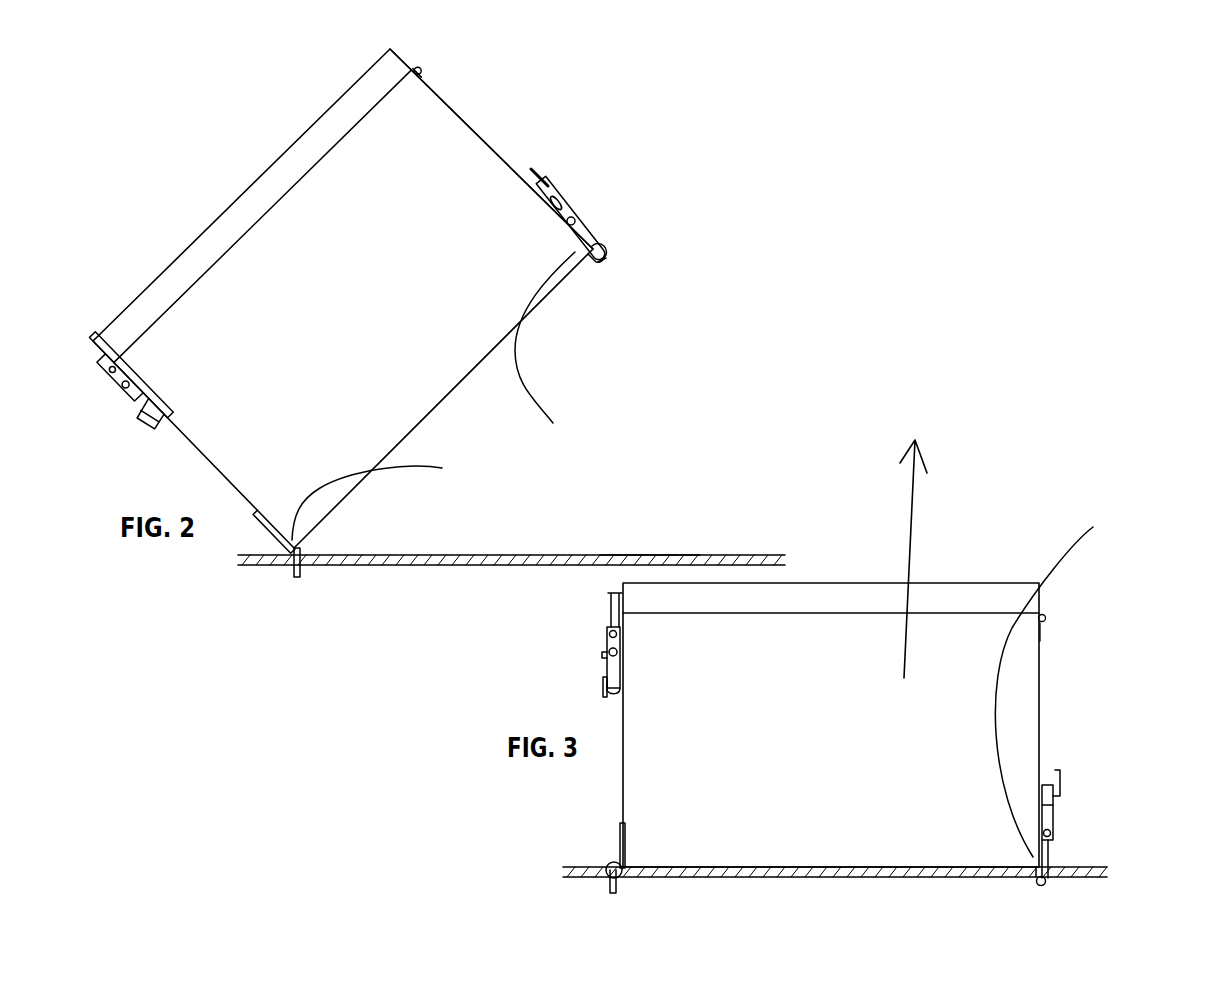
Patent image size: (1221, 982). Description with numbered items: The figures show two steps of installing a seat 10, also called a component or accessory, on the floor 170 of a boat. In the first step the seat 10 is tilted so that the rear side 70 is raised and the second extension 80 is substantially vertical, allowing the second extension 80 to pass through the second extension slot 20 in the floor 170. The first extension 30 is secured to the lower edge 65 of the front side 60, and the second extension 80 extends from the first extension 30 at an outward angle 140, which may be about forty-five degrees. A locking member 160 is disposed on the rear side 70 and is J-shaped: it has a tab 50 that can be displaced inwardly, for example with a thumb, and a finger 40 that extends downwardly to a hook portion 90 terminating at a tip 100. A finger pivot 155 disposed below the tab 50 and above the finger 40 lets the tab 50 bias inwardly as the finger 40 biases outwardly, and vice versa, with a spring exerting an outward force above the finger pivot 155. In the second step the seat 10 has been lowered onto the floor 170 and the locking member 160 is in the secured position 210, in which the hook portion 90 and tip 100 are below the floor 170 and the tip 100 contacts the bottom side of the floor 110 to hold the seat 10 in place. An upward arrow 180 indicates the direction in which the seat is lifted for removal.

In FIG. 2, the seat 10 is at (373, 293).
In FIG. 3, the seat 10 is at (838, 724).
In FIG. 2, the second extension slot 20 is at (303, 558).
In FIG. 2, the first extension 30 is at (277, 537).
In FIG. 3, the first extension 30 is at (617, 847).
In FIG. 2, the finger 40 is at (593, 242).
In FIG. 3, the finger 40 is at (1055, 849).
In FIG. 2, the tab 50 is at (537, 173).
In FIG. 3, the tab 50 is at (1067, 773).
In FIG. 2, the front side 60 is at (176, 422).
In FIG. 3, the front side 60 is at (622, 723).
In FIG. 2, the lower edge 65 is at (433, 396).
In FIG. 3, the lower edge 65 is at (1055, 682).
In FIG. 2, the rear side 70 is at (457, 113).
In FIG. 3, the rear side 70 is at (1040, 675).
In FIG. 2, the second extension 80 is at (295, 576).
In FIG. 3, the second extension 80 is at (610, 887).
In FIG. 2, the hook portion 90 is at (600, 262).
In FIG. 3, the hook portion 90 is at (1047, 887).
In FIG. 2, the tip 100 is at (592, 257).
In FIG. 3, the tip 100 is at (1033, 877).
In FIG. 3, the bottom side of the floor 110 is at (960, 880).
In FIG. 3, the outward angle 140 is at (610, 867).
In FIG. 3, the finger pivot 155 is at (1060, 813).
In FIG. 2, the locking member 160 is at (580, 194).
In FIG. 3, the locking member 160 is at (1079, 746).
In FIG. 2, the floor 170 is at (653, 556).
In FIG. 3, the lifting direction 180 is at (913, 523).
In FIG. 3, the secured position 210 is at (1062, 855).